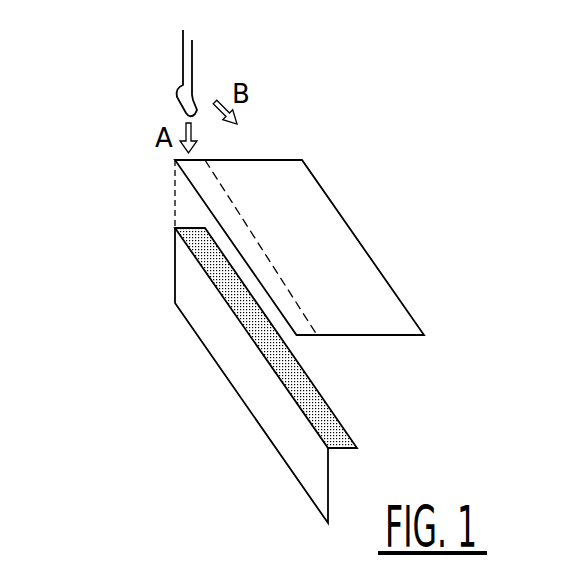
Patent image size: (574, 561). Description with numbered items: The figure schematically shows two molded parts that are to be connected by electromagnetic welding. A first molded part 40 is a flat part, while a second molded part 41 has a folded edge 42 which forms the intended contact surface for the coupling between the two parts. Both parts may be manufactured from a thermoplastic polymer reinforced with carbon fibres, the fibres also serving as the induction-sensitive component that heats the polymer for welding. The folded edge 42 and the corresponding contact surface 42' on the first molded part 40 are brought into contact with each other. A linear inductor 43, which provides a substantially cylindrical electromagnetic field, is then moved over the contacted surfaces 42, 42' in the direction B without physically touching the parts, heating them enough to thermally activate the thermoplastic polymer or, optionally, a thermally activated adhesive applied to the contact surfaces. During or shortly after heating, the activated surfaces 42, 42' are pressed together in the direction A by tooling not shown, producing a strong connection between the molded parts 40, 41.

The first molded part 40 is at (275, 170).
The second molded part 41 is at (238, 362).
The folded edge 42 is at (315, 338).
The contact surface 42' is at (317, 269).
The linear inductor 43 is at (180, 55).